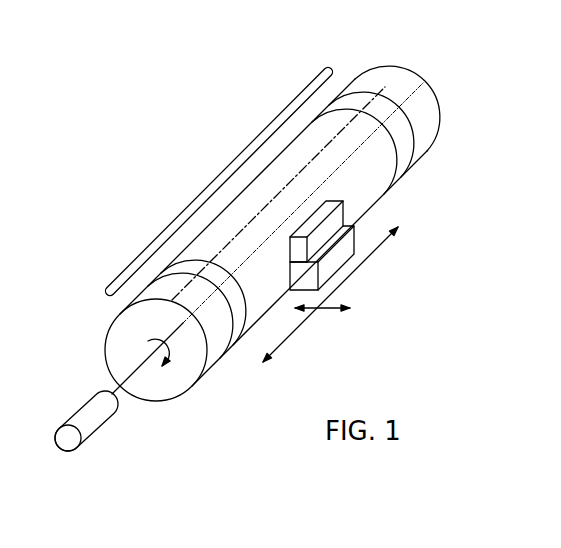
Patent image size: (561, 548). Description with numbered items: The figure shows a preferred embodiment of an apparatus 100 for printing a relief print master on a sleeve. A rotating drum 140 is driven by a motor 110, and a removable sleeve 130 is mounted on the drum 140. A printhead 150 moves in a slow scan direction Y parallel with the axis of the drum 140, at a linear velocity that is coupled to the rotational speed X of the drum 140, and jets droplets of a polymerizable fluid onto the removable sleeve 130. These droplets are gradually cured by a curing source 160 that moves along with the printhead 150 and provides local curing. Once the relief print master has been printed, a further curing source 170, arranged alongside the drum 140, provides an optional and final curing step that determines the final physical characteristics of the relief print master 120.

The apparatus 100 is at (138, 172).
The motor 110 is at (90, 422).
The relief print master 120 is at (377, 167).
The removable sleeve 130 is at (404, 143).
The rotating drum 140 is at (427, 112).
The printhead 150 is at (328, 268).
The curing source 160 is at (328, 223).
The curing source 170 is at (325, 62).